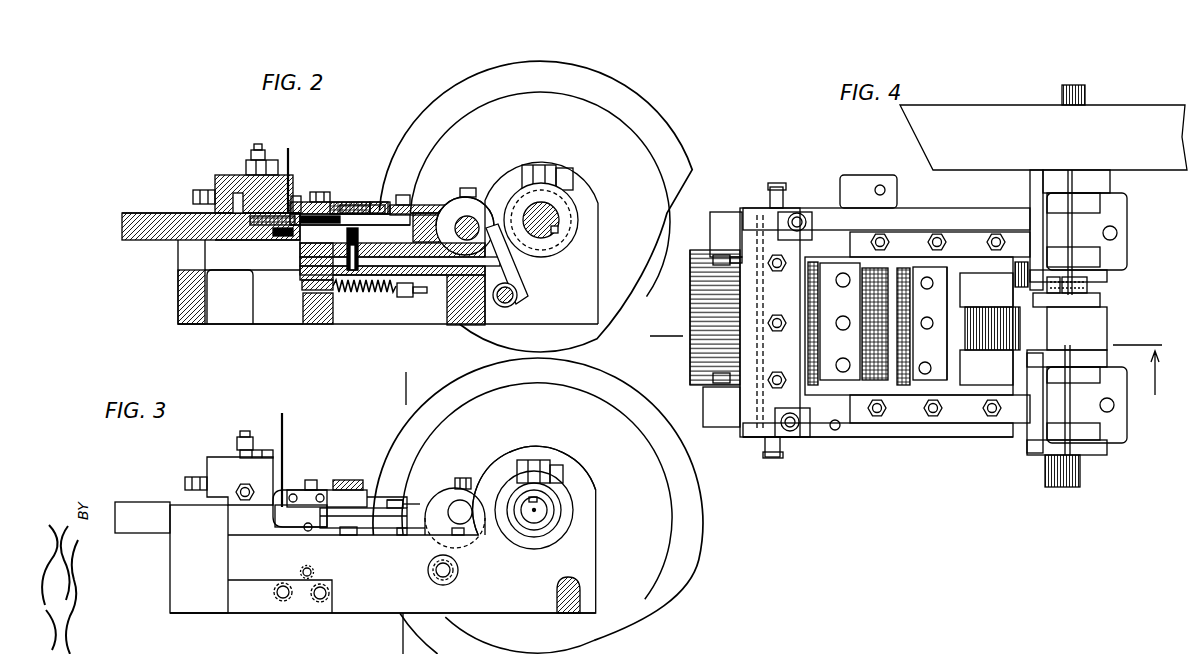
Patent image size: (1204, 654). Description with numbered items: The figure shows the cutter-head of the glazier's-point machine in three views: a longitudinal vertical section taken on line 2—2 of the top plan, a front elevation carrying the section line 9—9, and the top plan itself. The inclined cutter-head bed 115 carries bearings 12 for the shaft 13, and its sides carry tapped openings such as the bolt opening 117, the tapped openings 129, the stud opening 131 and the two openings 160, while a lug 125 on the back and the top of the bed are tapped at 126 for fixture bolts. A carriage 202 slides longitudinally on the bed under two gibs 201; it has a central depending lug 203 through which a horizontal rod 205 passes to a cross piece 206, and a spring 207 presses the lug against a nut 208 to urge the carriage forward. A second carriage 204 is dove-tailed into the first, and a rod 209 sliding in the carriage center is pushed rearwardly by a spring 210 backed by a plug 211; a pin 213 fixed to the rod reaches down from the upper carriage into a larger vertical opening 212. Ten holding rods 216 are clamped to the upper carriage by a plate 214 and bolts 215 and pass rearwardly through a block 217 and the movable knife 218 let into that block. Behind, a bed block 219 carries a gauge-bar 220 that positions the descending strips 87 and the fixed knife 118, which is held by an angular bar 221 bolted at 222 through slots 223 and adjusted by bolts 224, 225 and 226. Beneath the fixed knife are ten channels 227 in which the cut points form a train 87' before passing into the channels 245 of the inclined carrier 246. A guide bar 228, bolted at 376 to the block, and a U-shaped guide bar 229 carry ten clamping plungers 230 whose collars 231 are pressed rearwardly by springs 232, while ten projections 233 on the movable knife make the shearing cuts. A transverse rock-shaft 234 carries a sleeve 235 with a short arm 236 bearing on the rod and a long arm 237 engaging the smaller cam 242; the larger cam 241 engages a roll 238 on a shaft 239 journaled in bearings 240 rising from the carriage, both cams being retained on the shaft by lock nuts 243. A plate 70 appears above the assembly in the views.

In FIG. 4, the section line 2— 2 is at (906, 361).
In FIG. 3, the section line 9— 9 is at (399, 513).
In FIG. 2, the bearings 12 is at (552, 174).
In FIG. 4, the bearings 12 is at (1055, 218).
In FIG. 2, the shaft 13 is at (556, 212).
In FIG. 3, the shaft 13 is at (534, 516).
In FIG. 4, the shaft 13 is at (1082, 470).
In FIG. 2, the plate 70 is at (637, 108).
In FIG. 3, the plate 70 is at (614, 400).
In FIG. 4, the plate 70 is at (1010, 117).
In FIG. 2, the strips 87 is at (272, 160).
In FIG. 3, the strips 87 is at (289, 453).
In FIG. 2, the train 87' is at (218, 216).
In FIG. 2, the cutter-head bed 115 is at (193, 300).
In FIG. 3, the cutter-head bed 115 is at (383, 601).
In FIG. 4, the cutter-head bed 115 is at (953, 433).
In FIG. 3, the tapped opening 117 is at (558, 597).
In FIG. 2, the fixed knife 118 is at (247, 187).
In FIG. 3, the fixed knife 118 is at (228, 497).
In FIG. 4, the fixed knife 118 is at (793, 382).
In FIG. 3, the lug 125 is at (337, 480).
In FIG. 4, the lug 125 is at (870, 177).
In FIG. 3, the tapped opening 126 is at (345, 495).
In FIG. 4, the tapped opening 126 is at (886, 190).
In FIG. 3, the tapped openings 129 is at (313, 543).
In FIG. 3, the opening 131 is at (437, 572).
In FIG. 3, the openings 160 is at (320, 601).
In FIG. 4, the gibs 201 is at (964, 327).
In FIG. 2, the carriage 202 is at (443, 275).
In FIG. 3, the carriage 202 is at (385, 528).
In FIG. 4, the carriage 202 is at (953, 385).
In FIG. 2, the depending lug 203 is at (400, 295).
In FIG. 2, the carriage 204 is at (355, 272).
In FIG. 3, the carriage 204 is at (418, 528).
In FIG. 4, the carriage 204 is at (902, 380).
In FIG. 2, the horizontal rod 205 is at (306, 295).
In FIG. 2, the cross piece 206 is at (305, 318).
In FIG. 2, the spring 207 is at (388, 294).
In FIG. 2, the nut 208 is at (421, 298).
In FIG. 2, the rod 209 is at (500, 262).
In FIG. 2, the spring 210 is at (305, 265).
In FIG. 2, the plug 211 is at (230, 297).
In FIG. 2, the vertical opening 212 is at (347, 272).
In FIG. 2, the pin 213 is at (352, 272).
In FIG. 2, the plate 214 is at (412, 219).
In FIG. 3, the plate 214 is at (406, 506).
In FIG. 4, the plate 214 is at (928, 356).
In FIG. 2, the bolts 215 is at (410, 212).
In FIG. 3, the bolts 215 is at (400, 503).
In FIG. 4, the bolts 215 is at (930, 323).
In FIG. 2, the holding rods 216 is at (405, 213).
In FIG. 3, the holding rods 216 is at (397, 470).
In FIG. 4, the holding rods 216 is at (894, 410).
In FIG. 2, the block 217 is at (293, 242).
In FIG. 3, the block 217 is at (300, 515).
In FIG. 2, the movable knife 218 is at (297, 210).
In FIG. 2, the bed block 219 is at (207, 232).
In FIG. 2, the gauge-bar 220 is at (277, 235).
In FIG. 2, the angular bar 221 is at (227, 180).
In FIG. 3, the angular bar 221 is at (227, 465).
In FIG. 4, the angular bar 221 is at (777, 330).
In FIG. 2, the bolts 222 is at (270, 167).
In FIG. 3, the bolts 222 is at (265, 450).
In FIG. 4, the bolts 222 is at (797, 213).
In FIG. 4, the slots 223 is at (807, 218).
In FIG. 3, the bolts 224 is at (240, 500).
In FIG. 4, the bolts 224 is at (776, 188).
In FIG. 2, the bolts 225 is at (190, 193).
In FIG. 3, the bolts 225 is at (193, 482).
In FIG. 4, the bolts 225 is at (718, 258).
In FIG. 2, the bolts 226 is at (248, 157).
In FIG. 3, the bolts 226 is at (245, 437).
In FIG. 4, the bolts 226 is at (777, 272).
In FIG. 2, the channels 227 is at (212, 227).
In FIG. 2, the guide bar 228 is at (302, 190).
In FIG. 4, the guide bar 228 is at (837, 344).
In FIG. 2, the U-shaped guide bar 229 is at (393, 205).
In FIG. 3, the U-shaped guide bar 229 is at (375, 500).
In FIG. 4, the U-shaped guide bar 229 is at (890, 272).
In FIG. 2, the clamping plungers 230 is at (345, 203).
In FIG. 3, the clamping plungers 230 is at (283, 490).
In FIG. 4, the clamping plungers 230 is at (840, 321).
In FIG. 2, the collar 231 is at (332, 200).
In FIG. 4, the collar 231 is at (872, 268).
In FIG. 2, the springs 232 is at (372, 202).
In FIG. 4, the springs 232 is at (870, 390).
In FIG. 2, the projections 233 is at (298, 196).
In FIG. 3, the projections 233 is at (280, 513).
In FIG. 4, the projections 233 is at (813, 262).
In FIG. 2, the rock-shaft 234 is at (515, 297).
In FIG. 2, the sleeve 235 is at (505, 307).
In FIG. 2, the short arm 236 is at (505, 278).
In FIG. 2, the long arm 237 is at (576, 262).
In FIG. 2, the roll 238 is at (488, 216).
In FIG. 3, the roll 238 is at (481, 492).
In FIG. 4, the roll 238 is at (1000, 325).
In FIG. 2, the shaft 239 is at (479, 229).
In FIG. 3, the shaft 239 is at (461, 499).
In FIG. 4, the shaft 239 is at (997, 388).
In FIG. 2, the bearings 240 is at (450, 220).
In FIG. 3, the bearings 240 is at (446, 503).
In FIG. 4, the bearings 240 is at (986, 329).
In FIG. 2, the cam 241 is at (575, 222).
In FIG. 4, the cam 241 is at (1107, 330).
In FIG. 2, the cam 242 is at (567, 237).
In FIG. 4, the cam 242 is at (1100, 300).
In FIG. 4, the lock nuts 243 is at (1090, 290).
In FIG. 2, the channels 245 is at (137, 217).
In FIG. 4, the channels 245 is at (690, 318).
In FIG. 2, the carrier 246 is at (122, 232).
In FIG. 3, the carrier 246 is at (142, 517).
In FIG. 4, the carrier 246 is at (690, 280).
In FIG. 2, the bolting point 376 is at (318, 192).
In FIG. 3, the bolting point 376 is at (310, 480).
In FIG. 4, the bolting point 376 is at (843, 273).